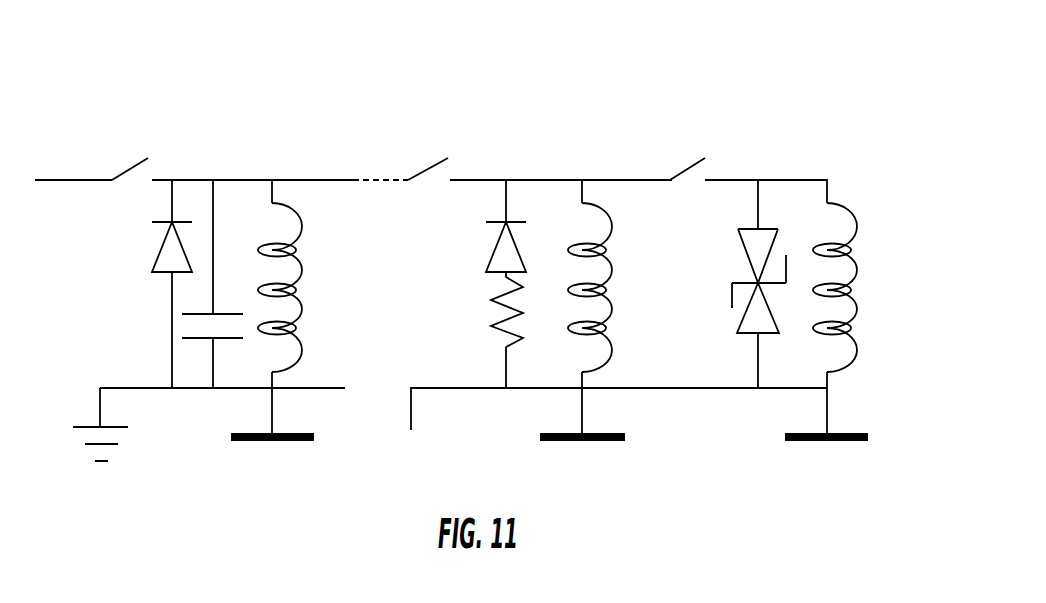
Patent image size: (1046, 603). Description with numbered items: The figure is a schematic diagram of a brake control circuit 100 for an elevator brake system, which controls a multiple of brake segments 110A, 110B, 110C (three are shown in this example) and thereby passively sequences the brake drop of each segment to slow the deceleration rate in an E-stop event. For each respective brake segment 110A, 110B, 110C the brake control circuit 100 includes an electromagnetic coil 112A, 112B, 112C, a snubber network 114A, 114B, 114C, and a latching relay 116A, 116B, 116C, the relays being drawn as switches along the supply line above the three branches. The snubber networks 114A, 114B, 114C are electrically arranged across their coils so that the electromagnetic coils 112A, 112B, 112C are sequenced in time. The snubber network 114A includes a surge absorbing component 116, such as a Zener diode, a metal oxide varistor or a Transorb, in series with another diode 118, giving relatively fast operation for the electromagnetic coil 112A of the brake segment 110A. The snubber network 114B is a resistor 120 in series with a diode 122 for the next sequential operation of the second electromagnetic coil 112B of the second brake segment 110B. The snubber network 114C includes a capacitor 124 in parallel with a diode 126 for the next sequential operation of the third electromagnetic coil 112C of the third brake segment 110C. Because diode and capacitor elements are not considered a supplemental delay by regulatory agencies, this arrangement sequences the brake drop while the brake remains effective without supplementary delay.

The brake control circuit 100 is at (628, 55).
The brake segment 110A is at (828, 453).
The second brake segment 110B is at (600, 453).
The third brake segment 110C is at (280, 453).
The electromagnetic coil 112A is at (852, 218).
The second electromagnetic coil 112B is at (611, 233).
The third electromagnetic coil 112C is at (302, 233).
The snubber network 114A is at (725, 328).
The snubber network 114B is at (468, 308).
The snubber network 114C is at (143, 323).
The latching relay 116A is at (717, 160).
The latching relay 116B is at (457, 160).
The latching relay 116C is at (155, 160).
The surge absorbing component 116 is at (748, 325).
The diode 118 is at (744, 248).
The resistor 120 is at (500, 327).
The diode 122 is at (497, 247).
The capacitor 124 is at (223, 313).
The diode 126 is at (163, 245).